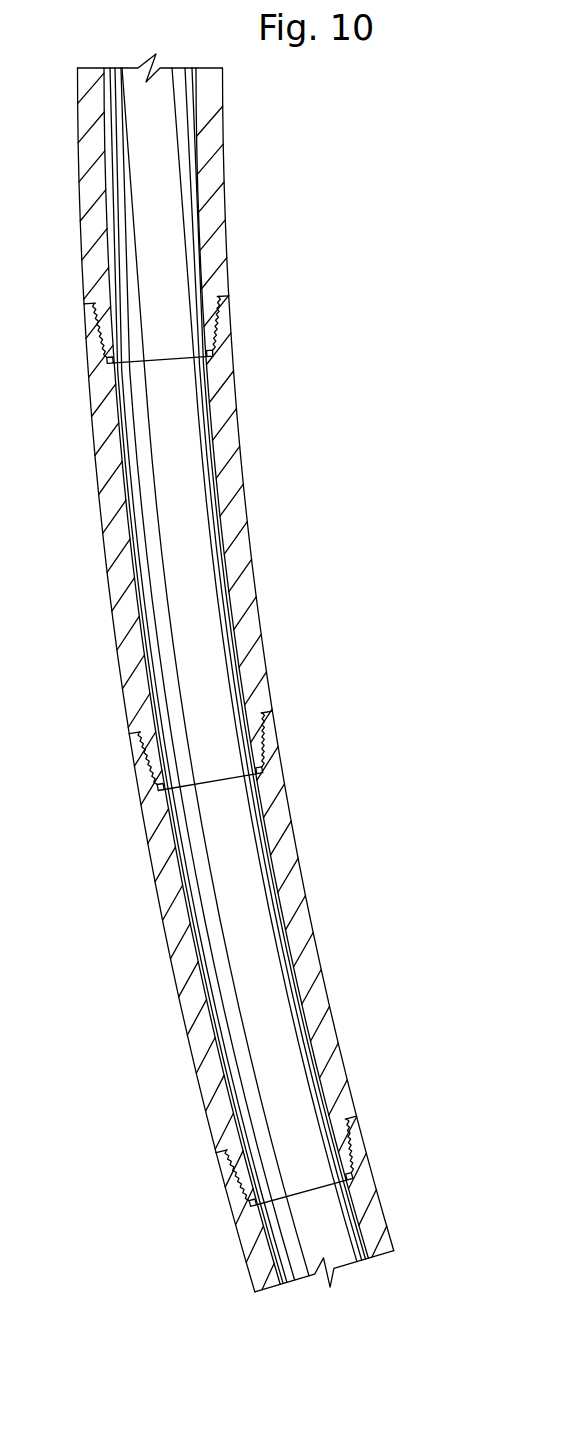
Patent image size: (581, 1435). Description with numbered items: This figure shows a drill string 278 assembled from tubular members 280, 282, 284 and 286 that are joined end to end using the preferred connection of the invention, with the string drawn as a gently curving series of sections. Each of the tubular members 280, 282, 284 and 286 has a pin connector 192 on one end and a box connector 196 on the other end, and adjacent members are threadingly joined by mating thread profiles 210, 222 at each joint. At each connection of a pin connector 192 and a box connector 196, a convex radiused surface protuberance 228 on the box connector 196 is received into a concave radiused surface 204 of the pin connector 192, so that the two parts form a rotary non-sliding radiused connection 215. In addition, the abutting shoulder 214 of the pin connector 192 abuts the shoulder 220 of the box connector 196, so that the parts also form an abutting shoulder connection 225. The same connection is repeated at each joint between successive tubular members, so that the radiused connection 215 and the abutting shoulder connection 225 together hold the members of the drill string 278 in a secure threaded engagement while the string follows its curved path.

The drill string 278 is at (335, 546).
The tubular member 280 is at (225, 169).
The tubular member 282 is at (246, 497).
The tubular member 284 is at (323, 967).
The tubular member 286 is at (239, 1246).
The pin connector 192 is at (270, 718).
The box connector 196 is at (273, 760).
The thread profile 210 is at (273, 733).
The thread profile 222 is at (277, 742).
The abutting shoulder connection 225 is at (287, 783).
The convex radiused surface protuberance 228 is at (134, 730).
The rotary non-sliding radiused connection 215 is at (107, 728).
The concave radiused surface 204 is at (131, 745).
The shoulder 220 is at (158, 779).
The abutting shoulder 214 is at (167, 798).